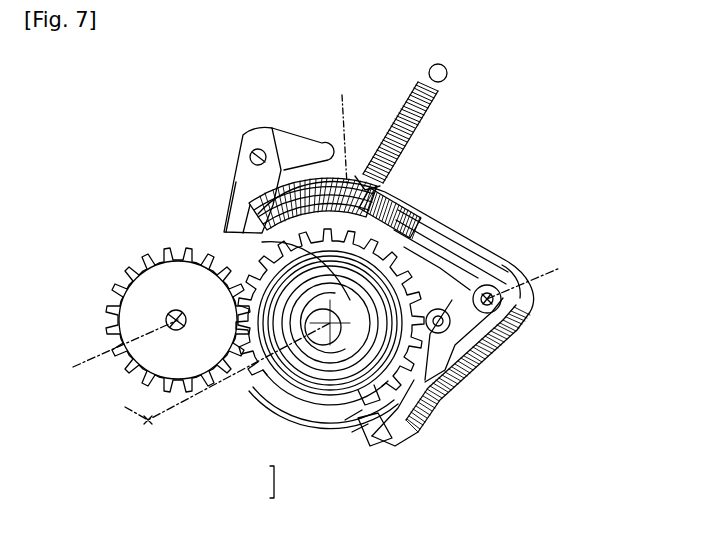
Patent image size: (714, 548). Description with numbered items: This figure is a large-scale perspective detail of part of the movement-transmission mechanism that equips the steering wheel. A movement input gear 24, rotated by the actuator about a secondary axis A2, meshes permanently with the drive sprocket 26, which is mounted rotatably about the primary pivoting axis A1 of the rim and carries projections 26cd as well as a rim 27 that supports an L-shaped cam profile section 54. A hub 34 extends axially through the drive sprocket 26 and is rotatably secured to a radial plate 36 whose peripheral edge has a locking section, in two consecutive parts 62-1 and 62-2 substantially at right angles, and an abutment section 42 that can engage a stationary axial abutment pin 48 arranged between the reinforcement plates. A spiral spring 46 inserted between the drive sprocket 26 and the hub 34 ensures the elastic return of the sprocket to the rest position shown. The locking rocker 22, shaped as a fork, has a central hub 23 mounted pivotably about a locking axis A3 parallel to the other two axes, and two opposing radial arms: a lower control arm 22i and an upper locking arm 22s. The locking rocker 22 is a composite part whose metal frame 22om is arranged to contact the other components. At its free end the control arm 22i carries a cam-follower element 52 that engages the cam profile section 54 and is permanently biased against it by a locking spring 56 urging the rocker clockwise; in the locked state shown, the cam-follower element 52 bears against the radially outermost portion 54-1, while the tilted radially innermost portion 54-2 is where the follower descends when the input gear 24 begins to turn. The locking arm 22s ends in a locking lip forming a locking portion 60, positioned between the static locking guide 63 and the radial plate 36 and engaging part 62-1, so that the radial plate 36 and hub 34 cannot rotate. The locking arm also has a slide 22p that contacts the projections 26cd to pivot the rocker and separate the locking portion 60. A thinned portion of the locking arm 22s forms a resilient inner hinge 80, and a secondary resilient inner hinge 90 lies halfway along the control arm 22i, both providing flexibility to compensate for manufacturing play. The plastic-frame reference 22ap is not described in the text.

The locking rocker 22 is at (516, 258).
The locking arm 22s is at (442, 250).
The slide 22p is at (384, 216).
The housing pivot boss 22ap is at (498, 331).
The control arm 22i is at (453, 376).
The metal frame 22om is at (398, 440).
The central hub 23 is at (513, 312).
The movement input gear 24 is at (141, 303).
The drive sprocket 26 is at (257, 381).
The projections 26cd is at (401, 222).
The rim of the drive sprocket 27 is at (275, 398).
The hub 34 is at (237, 247).
The radial plate 36 is at (452, 277).
The abutment section 42 is at (436, 345).
The spring 46 is at (345, 400).
The stationary axial abutment pin 48 is at (479, 368).
The cam-follower element 52 is at (388, 451).
The cam profile section 54 is at (261, 482).
The radially outermost portion 54-1 is at (356, 430).
The radially innermost portion 54-2 is at (370, 436).
The locking spring 56 is at (428, 118).
The locking portion 60 is at (253, 225).
The first part of the locking section 62-1 is at (256, 233).
The second part of the locking section 62-2 is at (277, 133).
The locking guide 63 is at (241, 145).
The resilient inner hinge 80 is at (342, 95).
The secondary resilient inner hinge 90 is at (430, 405).
The primary pivoting axis A1 is at (203, 373).
The secondary axis A2 is at (97, 356).
The locking axis A3 is at (560, 270).